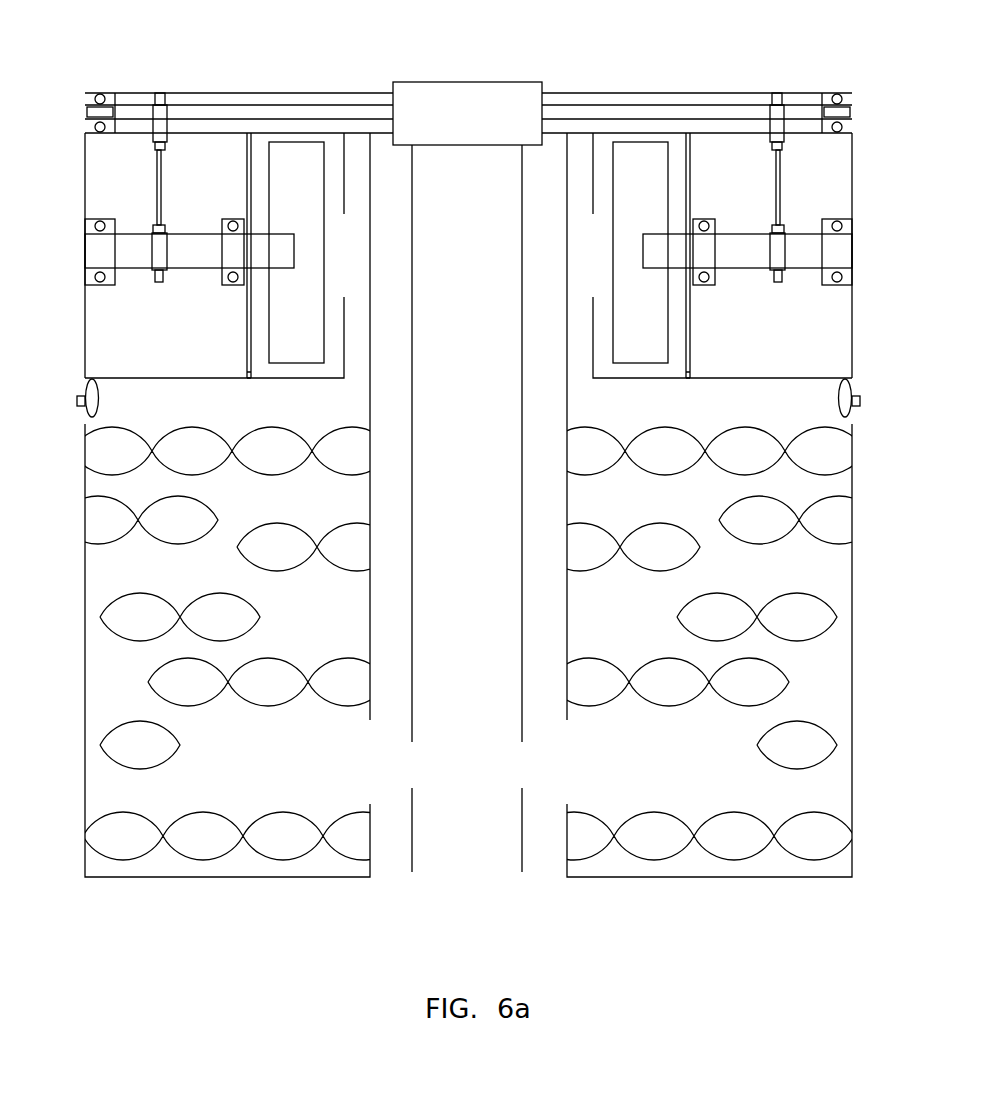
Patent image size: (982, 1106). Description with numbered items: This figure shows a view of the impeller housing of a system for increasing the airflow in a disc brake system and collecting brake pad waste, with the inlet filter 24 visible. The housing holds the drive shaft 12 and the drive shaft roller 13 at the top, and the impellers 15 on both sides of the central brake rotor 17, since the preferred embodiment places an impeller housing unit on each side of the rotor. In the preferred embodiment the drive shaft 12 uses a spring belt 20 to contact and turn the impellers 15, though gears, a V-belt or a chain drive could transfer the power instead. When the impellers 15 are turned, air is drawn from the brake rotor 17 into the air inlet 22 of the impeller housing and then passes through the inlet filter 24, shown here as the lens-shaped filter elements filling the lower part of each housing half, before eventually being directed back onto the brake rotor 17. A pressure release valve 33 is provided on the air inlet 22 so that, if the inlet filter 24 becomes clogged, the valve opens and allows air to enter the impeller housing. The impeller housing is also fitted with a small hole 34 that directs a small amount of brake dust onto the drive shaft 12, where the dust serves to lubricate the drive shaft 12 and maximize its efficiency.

The drive shaft 12 is at (616, 112).
The drive shaft roller 13 is at (521, 92).
The impellers 15 is at (287, 167).
The brake rotor 17 is at (429, 834).
The spring belt 20 is at (157, 187).
The air inlet 22 is at (577, 763).
The inlet filter 24 is at (110, 668).
The pressure release valve 33 is at (77, 399).
The small hole 34 is at (247, 372).